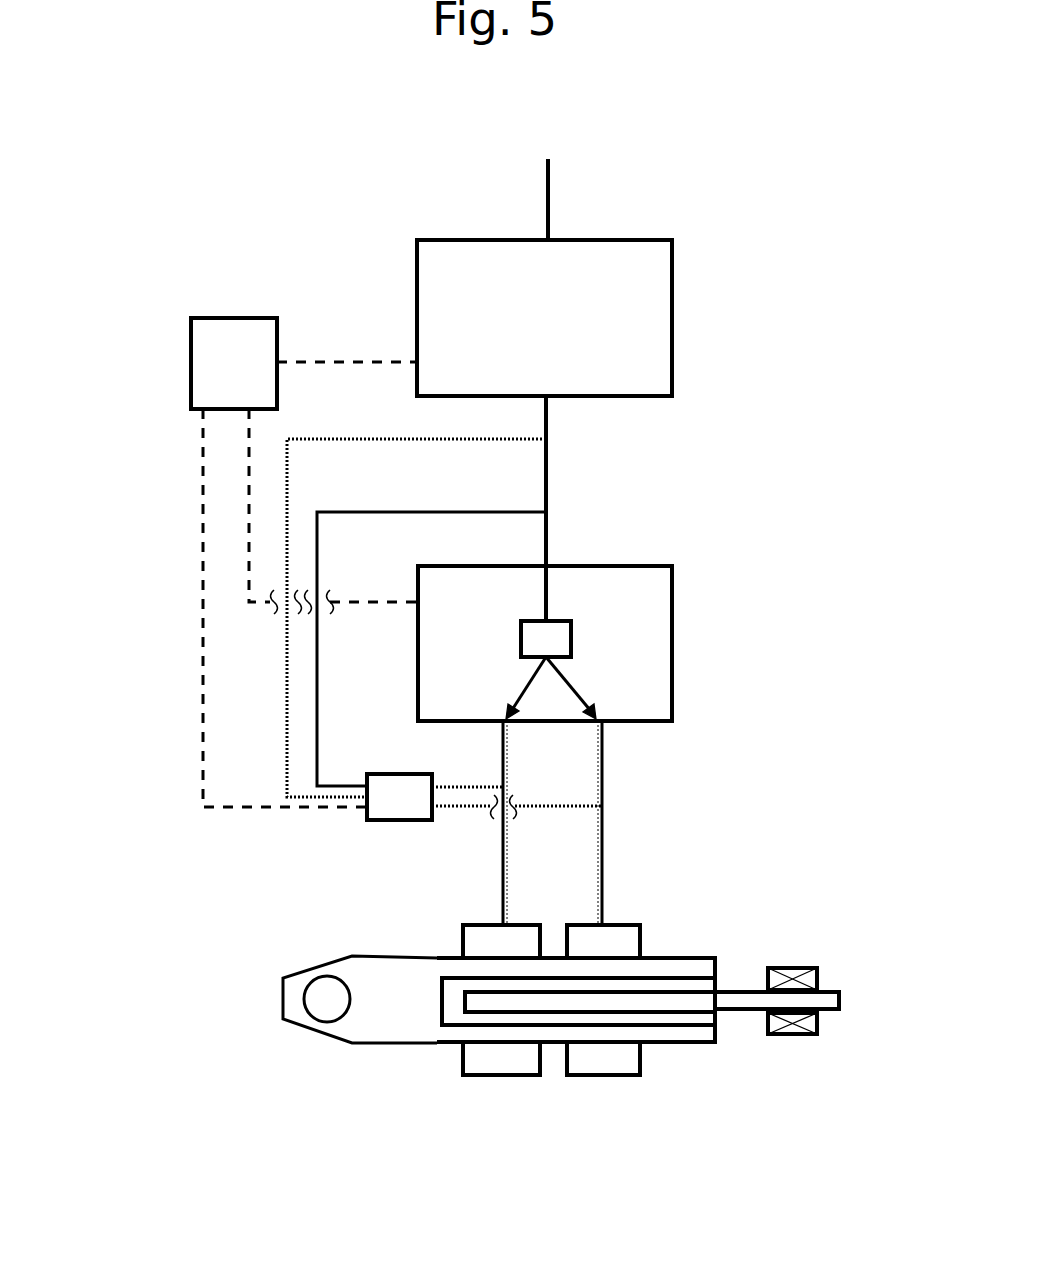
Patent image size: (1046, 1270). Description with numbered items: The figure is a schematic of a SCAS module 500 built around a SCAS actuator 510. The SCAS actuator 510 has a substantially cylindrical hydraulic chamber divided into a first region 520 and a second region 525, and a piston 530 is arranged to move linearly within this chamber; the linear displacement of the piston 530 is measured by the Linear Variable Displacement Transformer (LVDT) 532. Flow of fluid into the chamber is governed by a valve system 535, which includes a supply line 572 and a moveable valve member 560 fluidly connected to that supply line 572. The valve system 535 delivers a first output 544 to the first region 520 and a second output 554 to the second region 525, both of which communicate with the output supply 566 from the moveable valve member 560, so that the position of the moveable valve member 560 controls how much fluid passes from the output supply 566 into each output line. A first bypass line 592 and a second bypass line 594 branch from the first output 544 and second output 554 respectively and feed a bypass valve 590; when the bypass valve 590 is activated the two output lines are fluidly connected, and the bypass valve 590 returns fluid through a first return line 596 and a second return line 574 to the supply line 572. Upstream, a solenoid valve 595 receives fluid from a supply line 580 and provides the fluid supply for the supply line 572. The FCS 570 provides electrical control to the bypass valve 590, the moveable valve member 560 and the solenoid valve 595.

The SCAS module 500 is at (817, 210).
The SCAS actuator 510 is at (835, 872).
The first region 520 is at (500, 938).
The second region 525 is at (610, 938).
The piston 530 is at (735, 998).
The Linear Variable Displacement Transformer (LVDT) 532 is at (802, 1033).
The valve system 535 is at (627, 660).
The first output 544 is at (500, 757).
The second output 554 is at (603, 770).
The moveable valve member 560 is at (546, 636).
The output supply 566 is at (580, 690).
The FCS 570 is at (231, 346).
The supply line 572 is at (548, 477).
The second return line 574 is at (200, 657).
The supply line 580 is at (551, 190).
The bypass valve 590 is at (390, 798).
The first bypass line 592 is at (457, 787).
The second bypass line 594 is at (587, 808).
The solenoid valve 595 is at (623, 343).
The first return line 596 is at (317, 705).